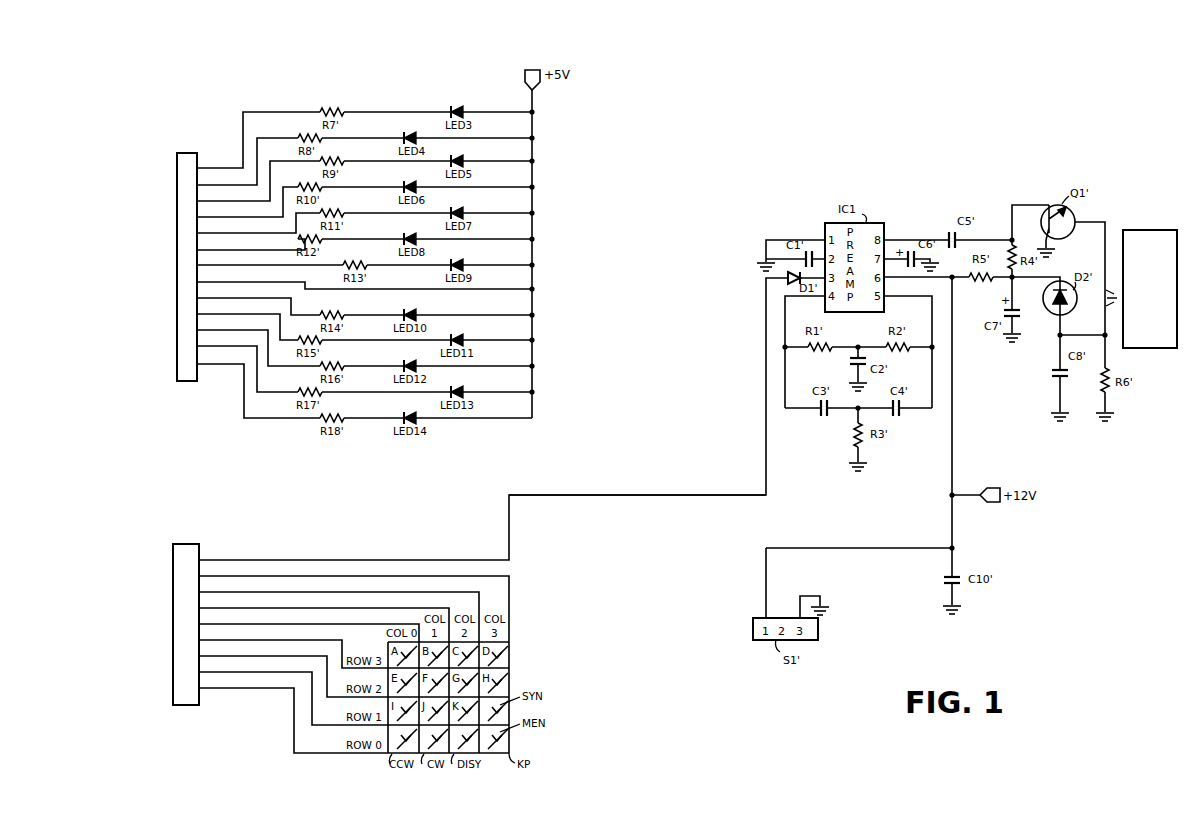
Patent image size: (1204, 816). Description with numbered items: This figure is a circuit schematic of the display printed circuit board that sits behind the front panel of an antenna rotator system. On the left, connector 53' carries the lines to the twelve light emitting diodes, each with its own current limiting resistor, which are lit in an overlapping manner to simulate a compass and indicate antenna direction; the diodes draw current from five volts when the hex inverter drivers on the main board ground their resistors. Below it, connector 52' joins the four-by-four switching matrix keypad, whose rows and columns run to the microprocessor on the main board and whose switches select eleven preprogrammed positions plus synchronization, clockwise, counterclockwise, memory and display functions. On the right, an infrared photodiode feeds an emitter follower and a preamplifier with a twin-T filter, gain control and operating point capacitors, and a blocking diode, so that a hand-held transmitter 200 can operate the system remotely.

The LED connector 53' is at (166, 267).
The keypad connector 52' is at (167, 624).
The hand-held transmitter 200 is at (1134, 230).